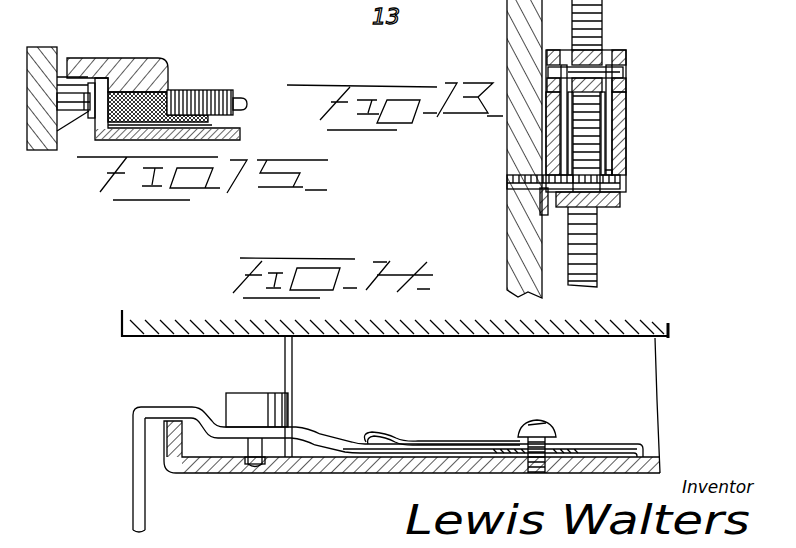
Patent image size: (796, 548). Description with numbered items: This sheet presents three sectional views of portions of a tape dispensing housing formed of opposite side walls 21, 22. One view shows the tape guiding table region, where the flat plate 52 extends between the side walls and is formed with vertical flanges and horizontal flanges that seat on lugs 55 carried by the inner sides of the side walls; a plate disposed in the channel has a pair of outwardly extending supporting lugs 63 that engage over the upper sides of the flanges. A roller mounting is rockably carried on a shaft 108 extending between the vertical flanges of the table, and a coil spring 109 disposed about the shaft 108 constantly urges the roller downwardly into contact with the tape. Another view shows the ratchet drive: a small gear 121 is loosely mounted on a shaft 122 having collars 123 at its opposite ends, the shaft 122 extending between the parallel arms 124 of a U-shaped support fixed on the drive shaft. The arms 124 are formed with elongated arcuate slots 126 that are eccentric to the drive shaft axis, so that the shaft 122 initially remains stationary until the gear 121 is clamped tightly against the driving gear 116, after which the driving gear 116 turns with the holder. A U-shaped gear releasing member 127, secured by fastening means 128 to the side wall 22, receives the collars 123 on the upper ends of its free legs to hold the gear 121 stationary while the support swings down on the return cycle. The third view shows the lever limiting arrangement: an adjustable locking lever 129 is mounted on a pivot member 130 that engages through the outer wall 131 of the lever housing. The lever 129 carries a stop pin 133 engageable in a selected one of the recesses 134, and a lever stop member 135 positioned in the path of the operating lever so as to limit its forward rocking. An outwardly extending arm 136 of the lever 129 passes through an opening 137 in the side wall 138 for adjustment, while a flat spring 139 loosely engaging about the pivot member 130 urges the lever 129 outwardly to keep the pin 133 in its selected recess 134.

In FIG. 15, the side wall 21 is at (28, 69).
In FIG. 13, the side wall 22 is at (513, 242).
In FIG. 15, the flat plate 52 is at (262, 144).
In FIG. 15, the lugs 55 is at (50, 178).
In FIG. 15, the supporting lugs 63 is at (97, 62).
In FIG. 15, the shaft 108 is at (243, 98).
In FIG. 15, the coil spring 109 is at (213, 91).
In FIG. 13, the driving gear 116 is at (600, 242).
In FIG. 13, the small gear 121 is at (591, 50).
In FIG. 13, the shaft 122 is at (627, 68).
In FIG. 13, the collars 123 is at (626, 50).
In FIG. 13, the parallel arms 124 is at (605, 130).
In FIG. 13, the arcuate slots 126 is at (607, 105).
In FIG. 13, the gear releasing member 127 is at (626, 152).
In FIG. 13, the fastening means 128 is at (617, 182).
In FIG. 13, the adjustable locking lever 129 is at (617, 166).
In FIG. 14, the adjustable locking lever 129 is at (335, 437).
In FIG. 14, the pivot member 130 is at (547, 425).
In FIG. 14, the outer wall 131 is at (647, 463).
In FIG. 14, the stop pin 133 is at (250, 440).
In FIG. 14, the recesses 134 is at (282, 458).
In FIG. 14, the lever stop member 135 is at (247, 400).
In FIG. 14, the arm 136 is at (133, 504).
In FIG. 14, the opening 137 is at (175, 421).
In FIG. 14, the side wall 138 is at (172, 437).
In FIG. 14, the flat spring 139 is at (473, 434).